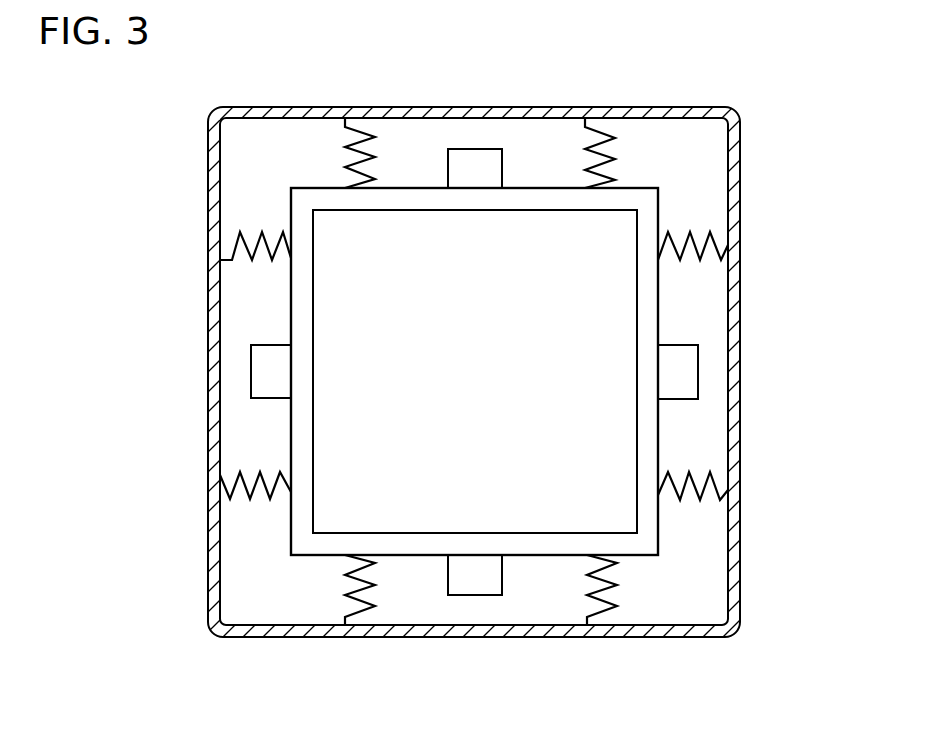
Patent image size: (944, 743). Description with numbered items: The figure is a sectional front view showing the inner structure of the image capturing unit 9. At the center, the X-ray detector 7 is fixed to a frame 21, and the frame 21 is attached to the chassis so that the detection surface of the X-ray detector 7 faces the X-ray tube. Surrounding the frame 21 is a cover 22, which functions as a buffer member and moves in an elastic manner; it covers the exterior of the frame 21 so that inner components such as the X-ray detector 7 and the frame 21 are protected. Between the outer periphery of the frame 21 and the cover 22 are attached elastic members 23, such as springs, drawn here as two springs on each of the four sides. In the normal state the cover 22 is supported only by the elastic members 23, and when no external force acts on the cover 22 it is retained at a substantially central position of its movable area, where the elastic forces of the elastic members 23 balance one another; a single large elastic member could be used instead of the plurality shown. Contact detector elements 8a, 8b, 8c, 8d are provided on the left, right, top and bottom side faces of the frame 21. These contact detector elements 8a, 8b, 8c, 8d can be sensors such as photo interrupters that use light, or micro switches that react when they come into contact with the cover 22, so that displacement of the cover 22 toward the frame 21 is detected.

The X-ray detector 7 is at (622, 242).
The contact detector element 8a is at (251, 367).
The contact detector element 8b is at (698, 370).
The contact detector element 8c is at (474, 149).
The contact detector element 8d is at (475, 596).
The image capturing unit 9 is at (770, 62).
The frame 21 is at (651, 188).
The cover 22 is at (257, 107).
The elastic members 23 is at (360, 128).